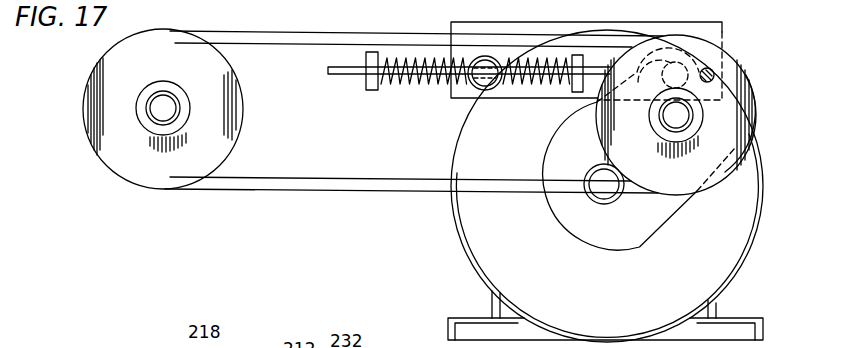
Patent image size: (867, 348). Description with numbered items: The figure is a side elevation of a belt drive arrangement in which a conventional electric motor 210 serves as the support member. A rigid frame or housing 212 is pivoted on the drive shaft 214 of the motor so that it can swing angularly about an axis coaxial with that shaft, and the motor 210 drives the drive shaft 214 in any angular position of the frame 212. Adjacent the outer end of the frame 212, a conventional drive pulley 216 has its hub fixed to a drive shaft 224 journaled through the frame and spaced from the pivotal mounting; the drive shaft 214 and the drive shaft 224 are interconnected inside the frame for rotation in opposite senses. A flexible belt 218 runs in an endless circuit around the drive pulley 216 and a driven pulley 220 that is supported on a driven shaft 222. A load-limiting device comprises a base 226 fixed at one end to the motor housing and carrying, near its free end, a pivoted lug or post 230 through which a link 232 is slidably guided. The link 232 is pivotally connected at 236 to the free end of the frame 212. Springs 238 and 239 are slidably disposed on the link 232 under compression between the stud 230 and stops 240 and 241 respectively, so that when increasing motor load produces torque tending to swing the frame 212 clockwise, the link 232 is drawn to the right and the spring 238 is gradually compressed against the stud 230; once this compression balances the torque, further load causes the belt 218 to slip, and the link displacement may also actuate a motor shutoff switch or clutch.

The electric motor 210 is at (620, 311).
The rigid frame or housing 212 is at (657, 217).
The drive shaft 214 is at (603, 205).
The drive pulley 216 is at (678, 172).
The belt 218 is at (328, 193).
The driven pulley 220 is at (150, 178).
The driven shaft 222 is at (167, 97).
The drive shaft 224 is at (672, 120).
The base 226 is at (648, 27).
The pivoted lug or post 230 is at (488, 58).
The link 232 is at (352, 75).
The pivotal connection 236 is at (724, 40).
The spring 238 is at (439, 85).
The spring 239 is at (551, 86).
The stop or abutment 240 is at (372, 91).
The stop or abutment 241 is at (582, 55).